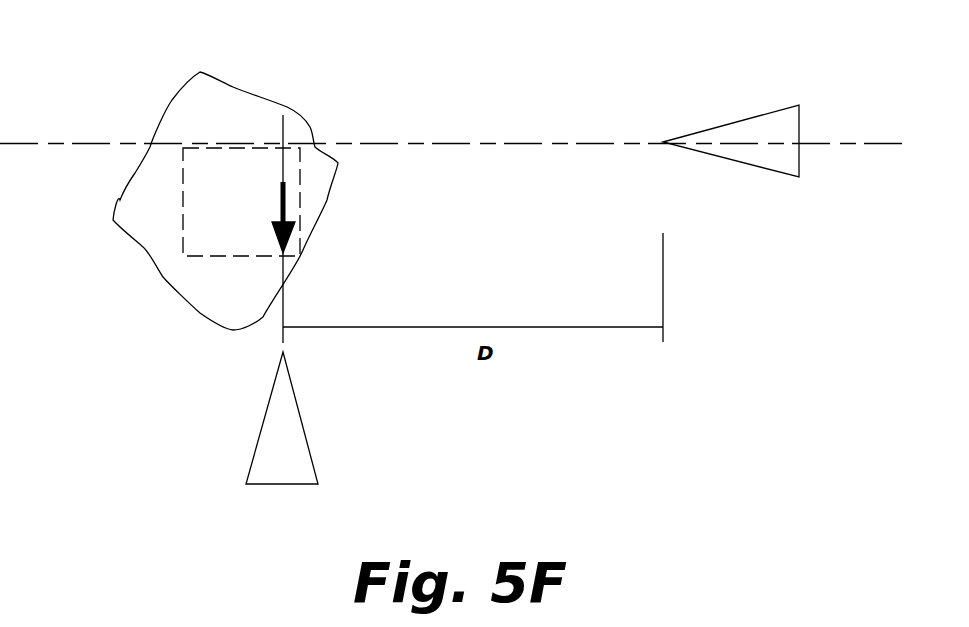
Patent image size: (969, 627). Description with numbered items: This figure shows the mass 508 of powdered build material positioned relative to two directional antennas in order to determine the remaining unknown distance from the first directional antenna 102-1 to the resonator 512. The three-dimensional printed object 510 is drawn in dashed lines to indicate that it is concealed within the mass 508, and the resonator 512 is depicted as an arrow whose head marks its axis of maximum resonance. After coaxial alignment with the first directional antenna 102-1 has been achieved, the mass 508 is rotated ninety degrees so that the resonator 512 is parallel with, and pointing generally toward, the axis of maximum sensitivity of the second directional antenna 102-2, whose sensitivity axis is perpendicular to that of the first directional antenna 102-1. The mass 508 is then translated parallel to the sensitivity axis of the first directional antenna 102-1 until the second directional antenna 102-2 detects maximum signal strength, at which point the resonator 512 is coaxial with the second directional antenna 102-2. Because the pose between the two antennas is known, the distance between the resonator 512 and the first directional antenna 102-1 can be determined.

The first directional antenna 102-1 is at (773, 122).
The second directional antenna 102-2 is at (263, 418).
The mass 508 is at (172, 102).
The 3D printed object 510 is at (205, 240).
The resonator 512 is at (292, 235).